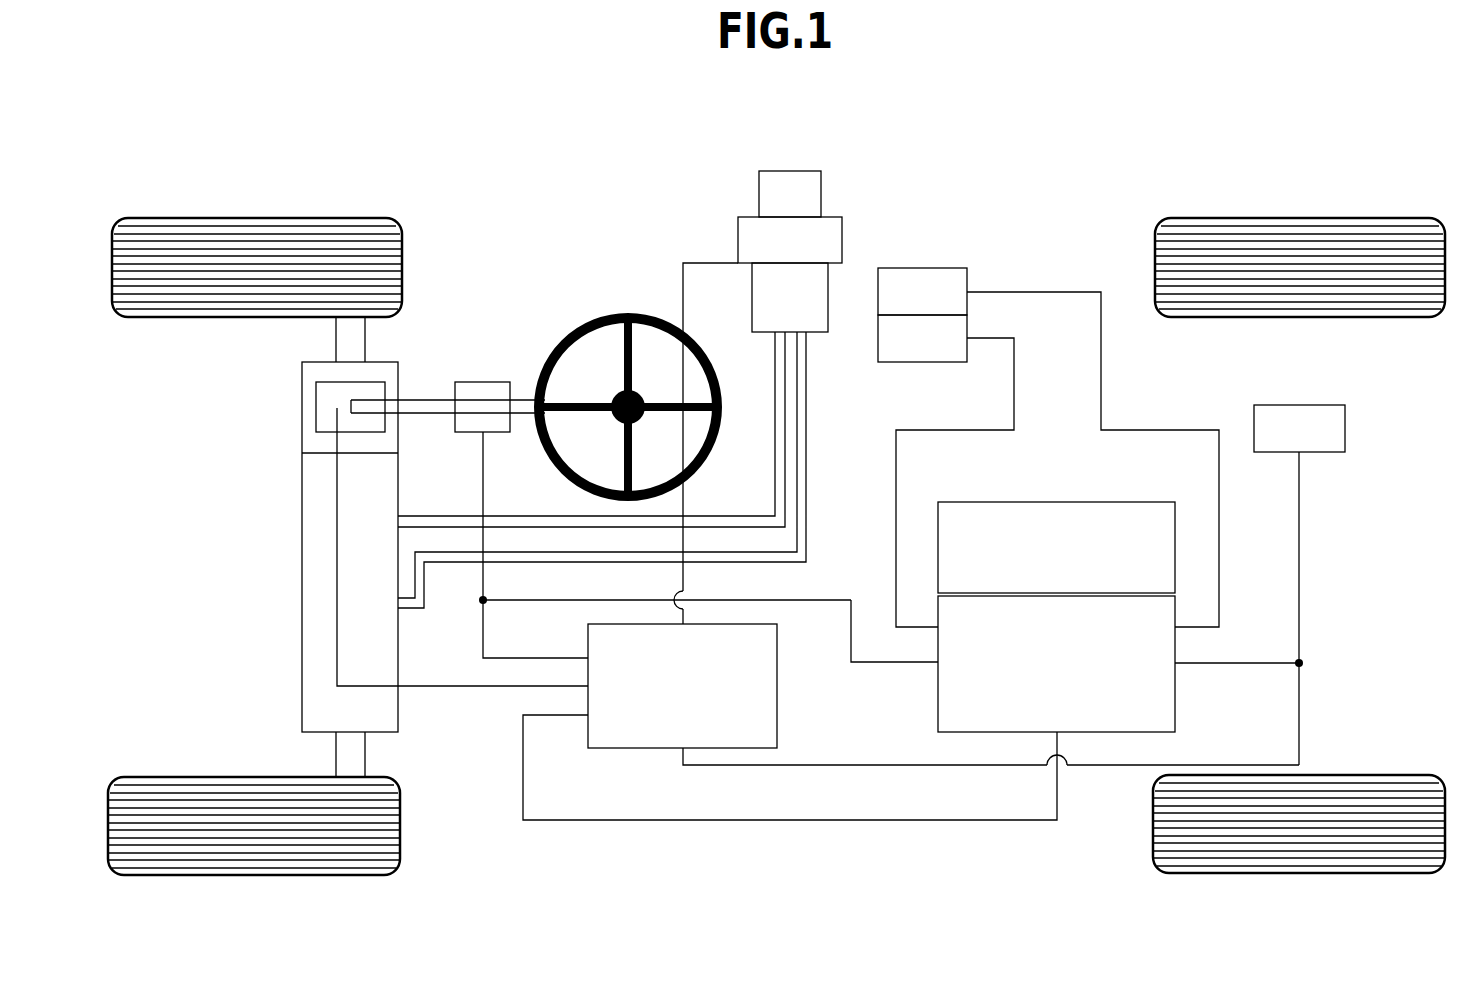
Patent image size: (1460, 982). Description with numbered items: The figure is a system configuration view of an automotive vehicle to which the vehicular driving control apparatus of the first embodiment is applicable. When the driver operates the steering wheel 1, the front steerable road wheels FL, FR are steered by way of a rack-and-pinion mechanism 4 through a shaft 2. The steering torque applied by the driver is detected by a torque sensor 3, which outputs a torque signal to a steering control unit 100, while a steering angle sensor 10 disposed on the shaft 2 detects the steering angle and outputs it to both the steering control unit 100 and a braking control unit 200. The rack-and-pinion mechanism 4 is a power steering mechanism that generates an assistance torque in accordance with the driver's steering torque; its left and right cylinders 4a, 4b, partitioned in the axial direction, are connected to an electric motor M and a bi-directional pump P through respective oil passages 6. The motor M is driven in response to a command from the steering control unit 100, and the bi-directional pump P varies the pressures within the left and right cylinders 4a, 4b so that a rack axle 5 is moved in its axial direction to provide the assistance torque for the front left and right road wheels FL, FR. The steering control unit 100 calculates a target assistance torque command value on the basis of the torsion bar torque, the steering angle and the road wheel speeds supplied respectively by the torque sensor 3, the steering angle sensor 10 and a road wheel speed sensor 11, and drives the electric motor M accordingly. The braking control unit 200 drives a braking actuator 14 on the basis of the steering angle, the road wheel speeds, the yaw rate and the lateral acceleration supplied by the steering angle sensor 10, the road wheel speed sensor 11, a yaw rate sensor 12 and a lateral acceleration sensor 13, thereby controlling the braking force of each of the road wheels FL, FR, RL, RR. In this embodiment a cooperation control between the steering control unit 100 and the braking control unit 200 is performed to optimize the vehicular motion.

The steering wheel 1 is at (612, 312).
The shaft 2 is at (413, 400).
The torque sensor 3 is at (316, 405).
The rack-and-pinion mechanism 4 is at (290, 553).
The left cylinder 4a is at (302, 432).
The right cylinder 4b is at (315, 660).
The rack axle 5 is at (330, 760).
The oil passages 6 is at (808, 525).
The steering angle sensor 10 is at (485, 382).
The road wheel speed sensor 11 is at (1308, 405).
The yaw rate sensor 12 is at (951, 268).
The lateral acceleration sensor 13 is at (901, 362).
The braking actuator 14 is at (1060, 502).
The steering control unit 100 is at (777, 697).
The braking control unit 200 is at (1175, 697).
The bi-directional pump P is at (740, 217).
The electric motor M is at (828, 280).
The front right road wheel FR is at (317, 218).
The front left road wheel FL is at (245, 875).
The rear right road wheel RR is at (1302, 218).
The rear left road wheel RL is at (1292, 873).